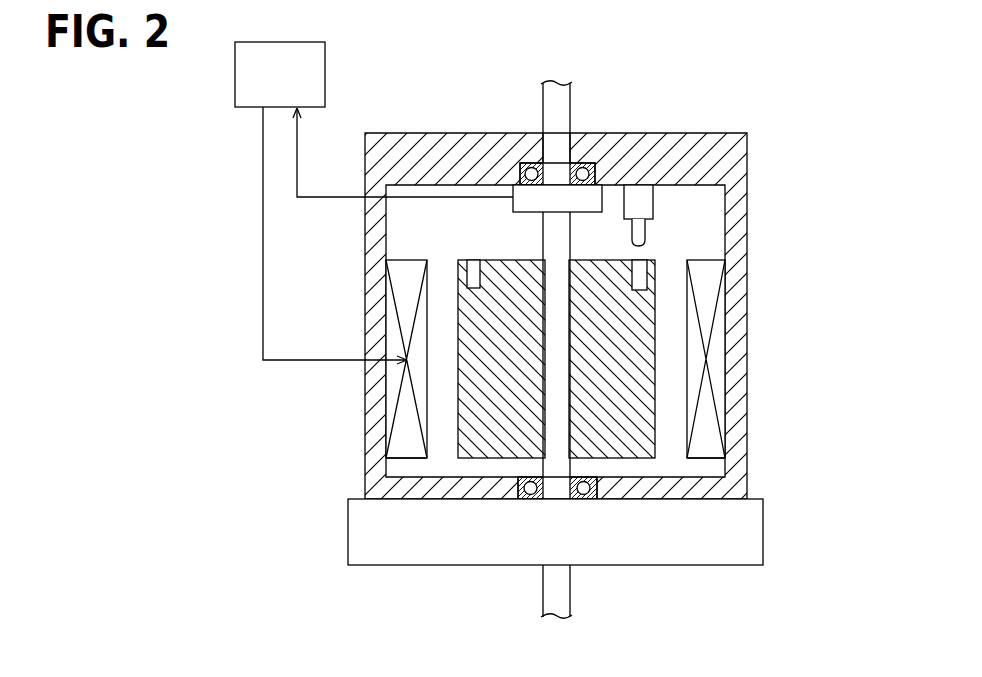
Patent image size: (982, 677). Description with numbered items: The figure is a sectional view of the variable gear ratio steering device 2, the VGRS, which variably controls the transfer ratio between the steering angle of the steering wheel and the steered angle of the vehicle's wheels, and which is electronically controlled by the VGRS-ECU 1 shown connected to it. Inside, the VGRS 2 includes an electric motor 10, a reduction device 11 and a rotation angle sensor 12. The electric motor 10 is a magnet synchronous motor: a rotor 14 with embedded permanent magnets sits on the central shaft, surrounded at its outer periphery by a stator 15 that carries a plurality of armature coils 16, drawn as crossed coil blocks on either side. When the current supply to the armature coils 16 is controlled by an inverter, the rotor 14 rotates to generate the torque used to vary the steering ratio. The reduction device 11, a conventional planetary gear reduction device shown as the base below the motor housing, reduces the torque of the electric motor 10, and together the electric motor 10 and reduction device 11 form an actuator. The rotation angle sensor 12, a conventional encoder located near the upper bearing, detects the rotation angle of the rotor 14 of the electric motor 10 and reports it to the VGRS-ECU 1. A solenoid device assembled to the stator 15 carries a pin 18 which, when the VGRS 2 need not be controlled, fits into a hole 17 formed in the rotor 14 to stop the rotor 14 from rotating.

The VGRS-ECU 1 is at (325, 64).
The variable gear ratio steering device 2 is at (761, 61).
The electric motor 10 is at (761, 193).
The reduction device 11 is at (657, 550).
The rotation angle sensor 12 is at (526, 205).
The rotor 14 is at (643, 417).
The stator 15 is at (749, 313).
The armature coils 16 is at (712, 357).
The hole 17 is at (639, 268).
The pin 18 is at (638, 236).